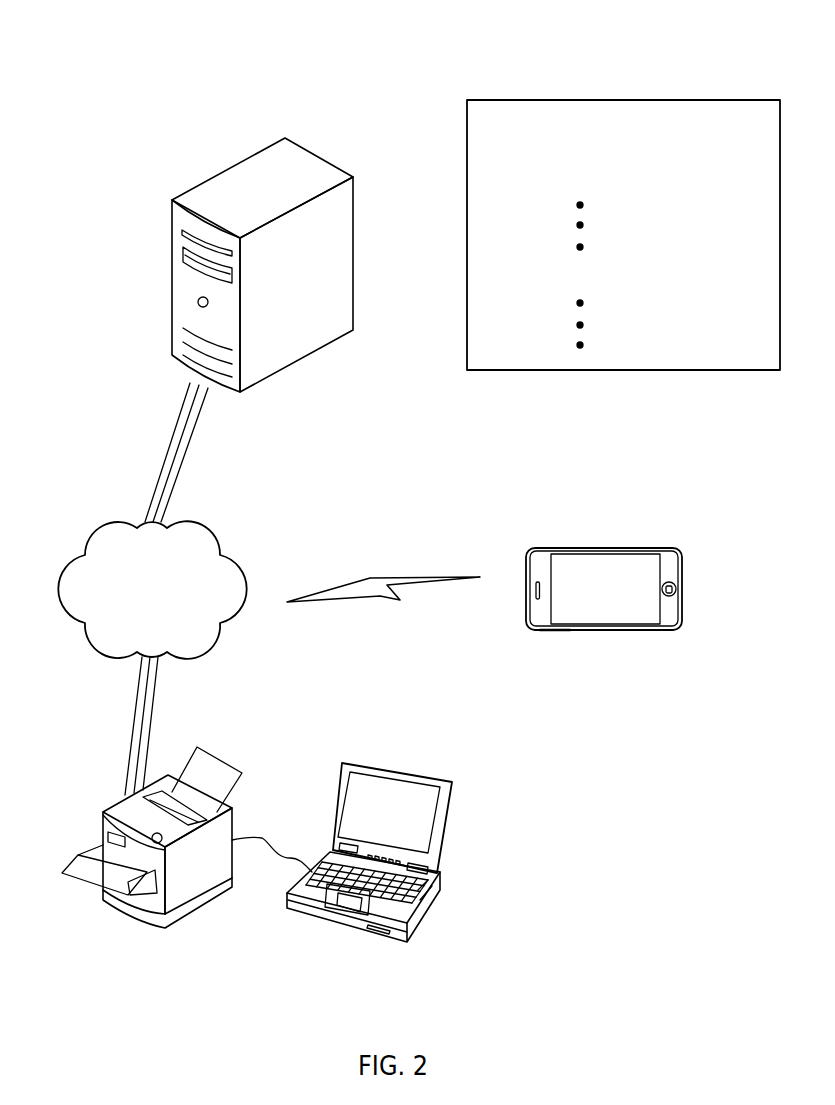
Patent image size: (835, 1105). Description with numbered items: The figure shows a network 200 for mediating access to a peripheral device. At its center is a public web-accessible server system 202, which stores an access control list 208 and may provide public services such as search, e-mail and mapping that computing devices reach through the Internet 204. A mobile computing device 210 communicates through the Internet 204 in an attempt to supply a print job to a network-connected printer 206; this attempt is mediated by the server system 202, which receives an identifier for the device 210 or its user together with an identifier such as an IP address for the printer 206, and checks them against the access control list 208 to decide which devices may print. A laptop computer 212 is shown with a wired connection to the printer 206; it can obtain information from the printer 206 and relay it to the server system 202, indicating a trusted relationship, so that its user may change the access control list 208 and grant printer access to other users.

The system environment 200 is at (126, 52).
The server system 202 is at (230, 165).
The Internet 204 is at (120, 522).
The printer 206 is at (123, 798).
The access control list 208 is at (533, 98).
The mobile computing device 210 is at (600, 547).
The laptop computer 212 is at (445, 825).